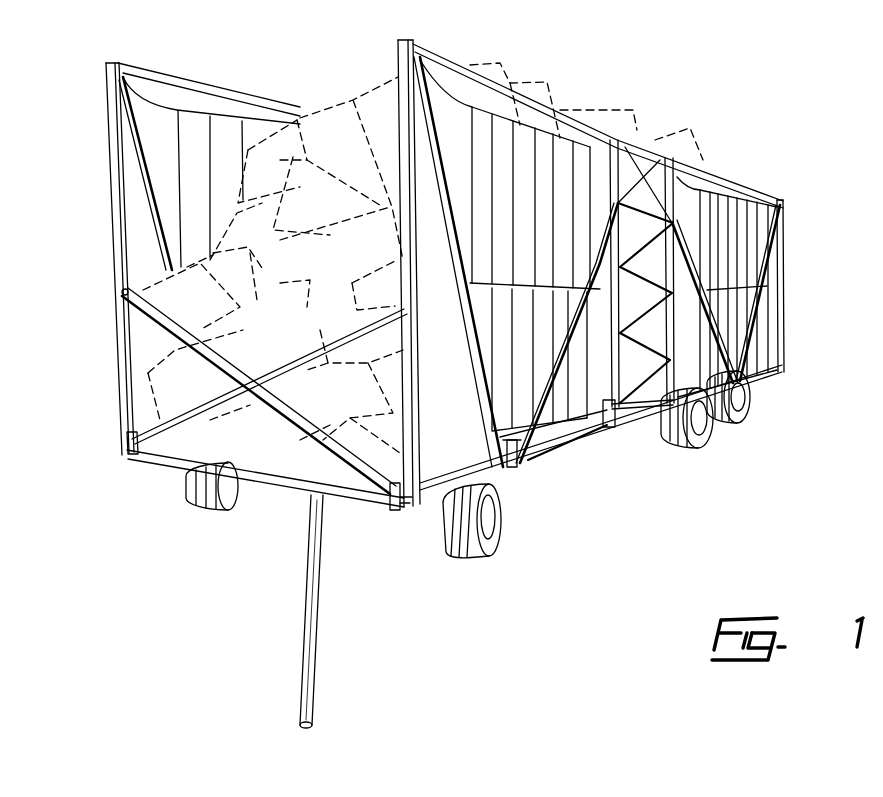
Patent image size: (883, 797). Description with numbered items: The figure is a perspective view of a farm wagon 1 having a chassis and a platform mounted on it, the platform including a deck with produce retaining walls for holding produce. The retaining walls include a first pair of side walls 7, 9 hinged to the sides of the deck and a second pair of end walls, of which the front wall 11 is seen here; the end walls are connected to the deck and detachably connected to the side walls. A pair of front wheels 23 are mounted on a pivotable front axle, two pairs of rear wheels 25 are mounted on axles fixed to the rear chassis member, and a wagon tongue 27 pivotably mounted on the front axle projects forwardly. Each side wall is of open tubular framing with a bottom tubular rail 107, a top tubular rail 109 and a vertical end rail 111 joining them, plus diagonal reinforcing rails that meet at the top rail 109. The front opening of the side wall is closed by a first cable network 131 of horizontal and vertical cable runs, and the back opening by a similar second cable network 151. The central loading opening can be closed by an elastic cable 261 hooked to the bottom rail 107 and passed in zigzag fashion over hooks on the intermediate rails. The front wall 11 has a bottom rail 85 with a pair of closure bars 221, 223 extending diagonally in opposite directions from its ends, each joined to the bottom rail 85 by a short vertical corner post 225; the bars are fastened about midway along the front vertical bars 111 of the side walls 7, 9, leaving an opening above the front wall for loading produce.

The farm wagon 1 is at (712, 95).
The side wall 7 is at (787, 262).
The side wall 9 is at (110, 158).
The front wall 11 is at (234, 391).
The front wheels 23 is at (192, 499).
The rear wheels 25 is at (757, 400).
The wagon tongue 27 is at (307, 588).
The bottom rail 85 is at (150, 460).
The bottom tubular rail 107 is at (570, 448).
The top tubular rail 109 is at (193, 87).
The vertical end rail 111 is at (107, 114).
The first cable network 131 is at (535, 110).
The second cable network 151 is at (727, 202).
The closure bar 221 is at (288, 408).
The closure bar 223 is at (297, 360).
The corner post 225 is at (126, 433).
The elastic cable 261 is at (642, 410).